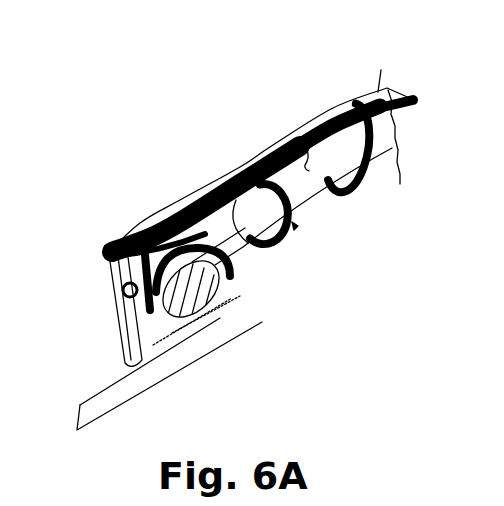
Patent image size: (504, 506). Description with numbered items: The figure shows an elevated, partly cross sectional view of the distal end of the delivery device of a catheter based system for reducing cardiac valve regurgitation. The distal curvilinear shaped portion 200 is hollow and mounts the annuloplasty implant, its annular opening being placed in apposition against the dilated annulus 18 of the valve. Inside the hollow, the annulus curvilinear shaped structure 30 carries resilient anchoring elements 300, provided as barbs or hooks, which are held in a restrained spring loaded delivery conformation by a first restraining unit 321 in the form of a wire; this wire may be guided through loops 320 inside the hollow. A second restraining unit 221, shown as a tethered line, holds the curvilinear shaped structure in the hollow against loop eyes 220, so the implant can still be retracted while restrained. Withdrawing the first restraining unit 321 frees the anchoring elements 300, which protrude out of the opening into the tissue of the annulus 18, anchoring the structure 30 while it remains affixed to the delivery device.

The annulus 18 is at (99, 398).
The annulus curvilinear shaped structure 30 is at (194, 299).
The distal curvilinear shaped portion 200 is at (105, 285).
The loop eyes 220 is at (112, 311).
The second restraining unit 221 is at (152, 240).
The resilient anchoring elements 300 is at (297, 128).
The loops 320 is at (255, 147).
The first restraining unit 321 is at (187, 204).